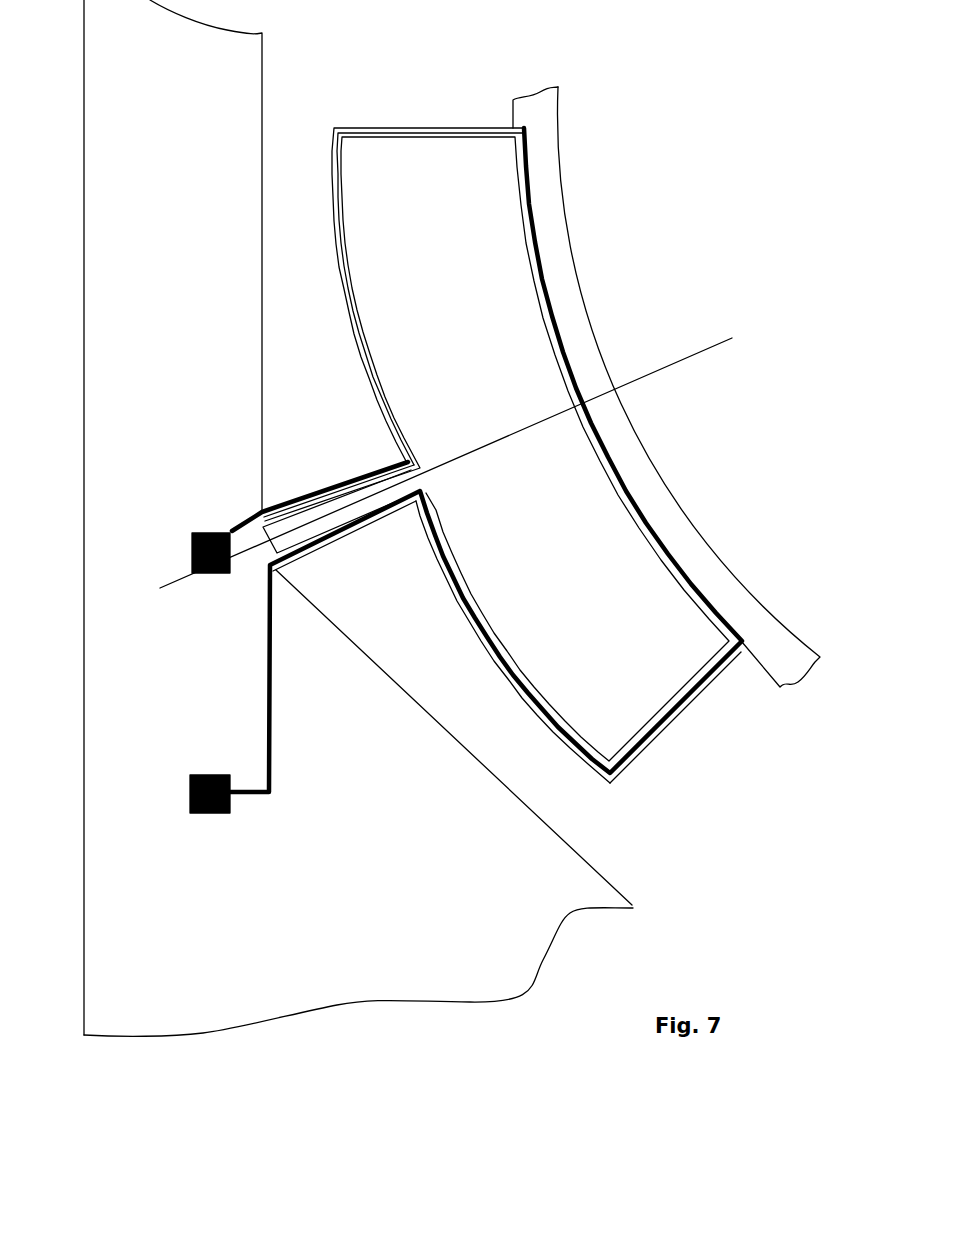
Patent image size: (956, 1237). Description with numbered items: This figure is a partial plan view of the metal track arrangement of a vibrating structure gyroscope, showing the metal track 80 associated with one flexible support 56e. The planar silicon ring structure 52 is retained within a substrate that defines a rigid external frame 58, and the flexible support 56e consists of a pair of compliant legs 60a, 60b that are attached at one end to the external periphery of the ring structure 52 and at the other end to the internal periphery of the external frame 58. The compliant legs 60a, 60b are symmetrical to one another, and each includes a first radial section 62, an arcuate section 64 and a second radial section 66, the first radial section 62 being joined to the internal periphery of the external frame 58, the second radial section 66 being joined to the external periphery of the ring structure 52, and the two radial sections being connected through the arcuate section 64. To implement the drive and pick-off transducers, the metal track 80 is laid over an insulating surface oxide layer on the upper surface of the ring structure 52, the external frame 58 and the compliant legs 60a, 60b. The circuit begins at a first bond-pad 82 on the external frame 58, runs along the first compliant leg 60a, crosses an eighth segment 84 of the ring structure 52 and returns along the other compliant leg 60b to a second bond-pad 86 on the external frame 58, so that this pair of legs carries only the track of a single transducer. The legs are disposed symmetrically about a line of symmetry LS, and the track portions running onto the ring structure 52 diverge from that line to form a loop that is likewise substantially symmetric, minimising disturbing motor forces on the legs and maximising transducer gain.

The external frame 58 is at (238, 67).
The flexible support 56e is at (402, 100).
The planar silicon ring structure 52 is at (553, 137).
The eighth segment 84 is at (553, 227).
The metal track 80 is at (362, 352).
The compliant leg 60a is at (322, 552).
The compliant leg 60b is at (296, 496).
The first radial section 62 is at (360, 520).
The arcuate section 64 is at (485, 643).
The second radial section 66 is at (713, 682).
The line of symmetry LS is at (683, 360).
The second bond-pad 86 is at (200, 533).
The first bond-pad 82 is at (200, 813).